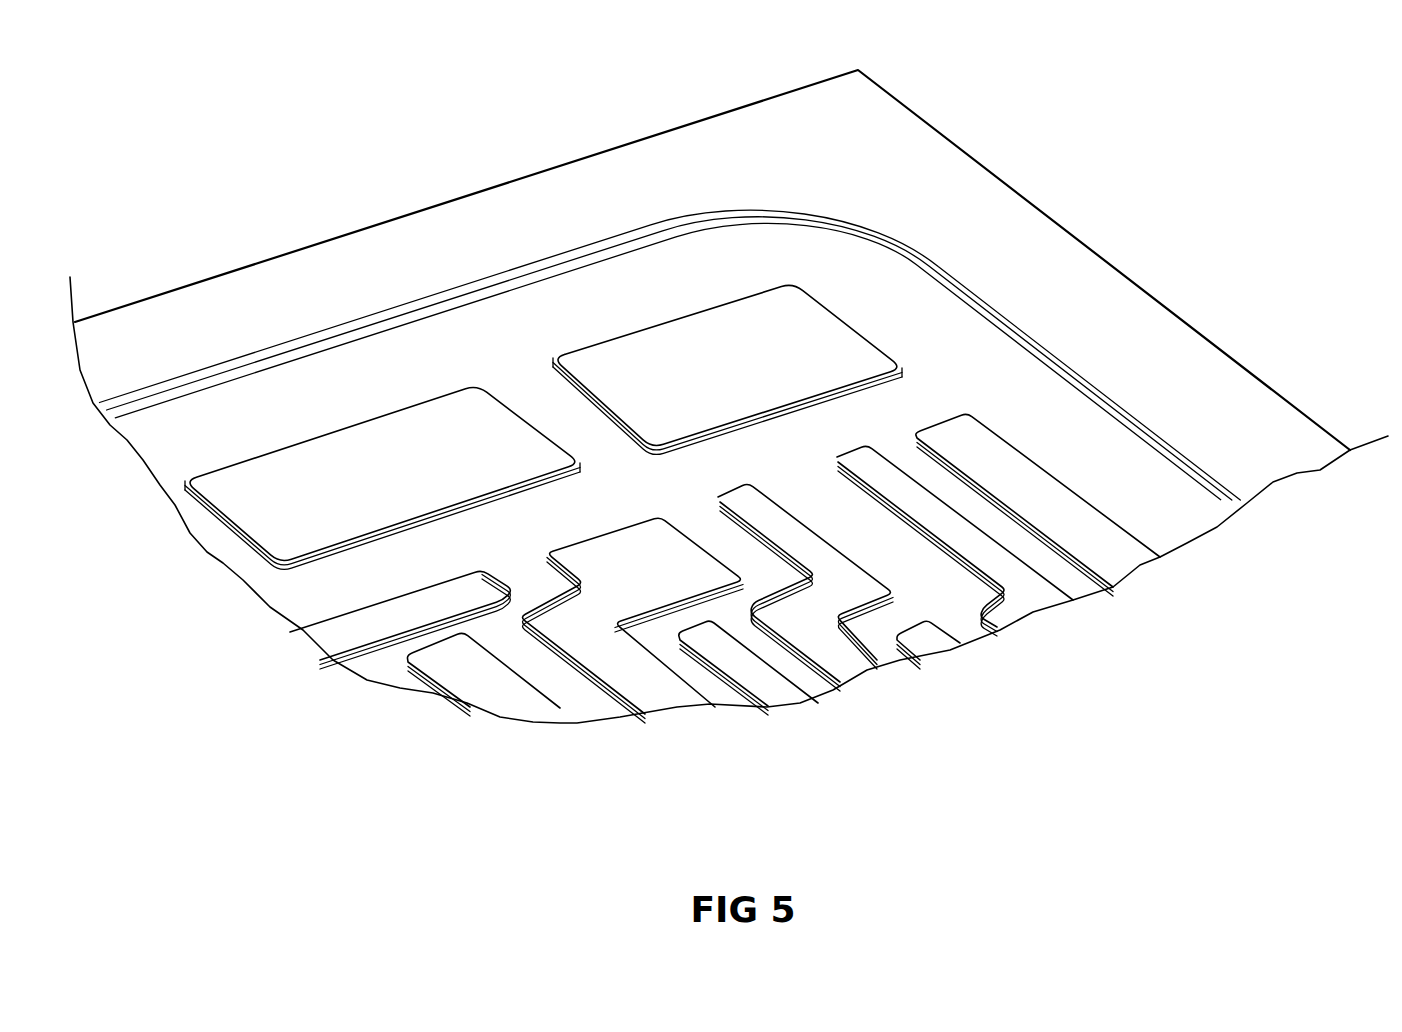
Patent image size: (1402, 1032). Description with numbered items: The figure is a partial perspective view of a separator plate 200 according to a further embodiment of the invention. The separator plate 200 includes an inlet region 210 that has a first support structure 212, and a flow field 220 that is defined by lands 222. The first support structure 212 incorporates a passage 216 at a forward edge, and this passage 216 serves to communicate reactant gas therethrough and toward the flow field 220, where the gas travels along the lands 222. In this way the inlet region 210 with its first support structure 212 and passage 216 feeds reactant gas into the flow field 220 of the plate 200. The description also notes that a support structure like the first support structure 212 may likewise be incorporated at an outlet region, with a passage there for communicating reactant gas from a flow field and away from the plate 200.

The separator plate 200 is at (922, 140).
The inlet region 210 is at (955, 320).
The first support structure 212 is at (703, 353).
The passage 216 is at (698, 435).
The flow field 220 is at (1053, 563).
The lands 222 is at (1020, 480).